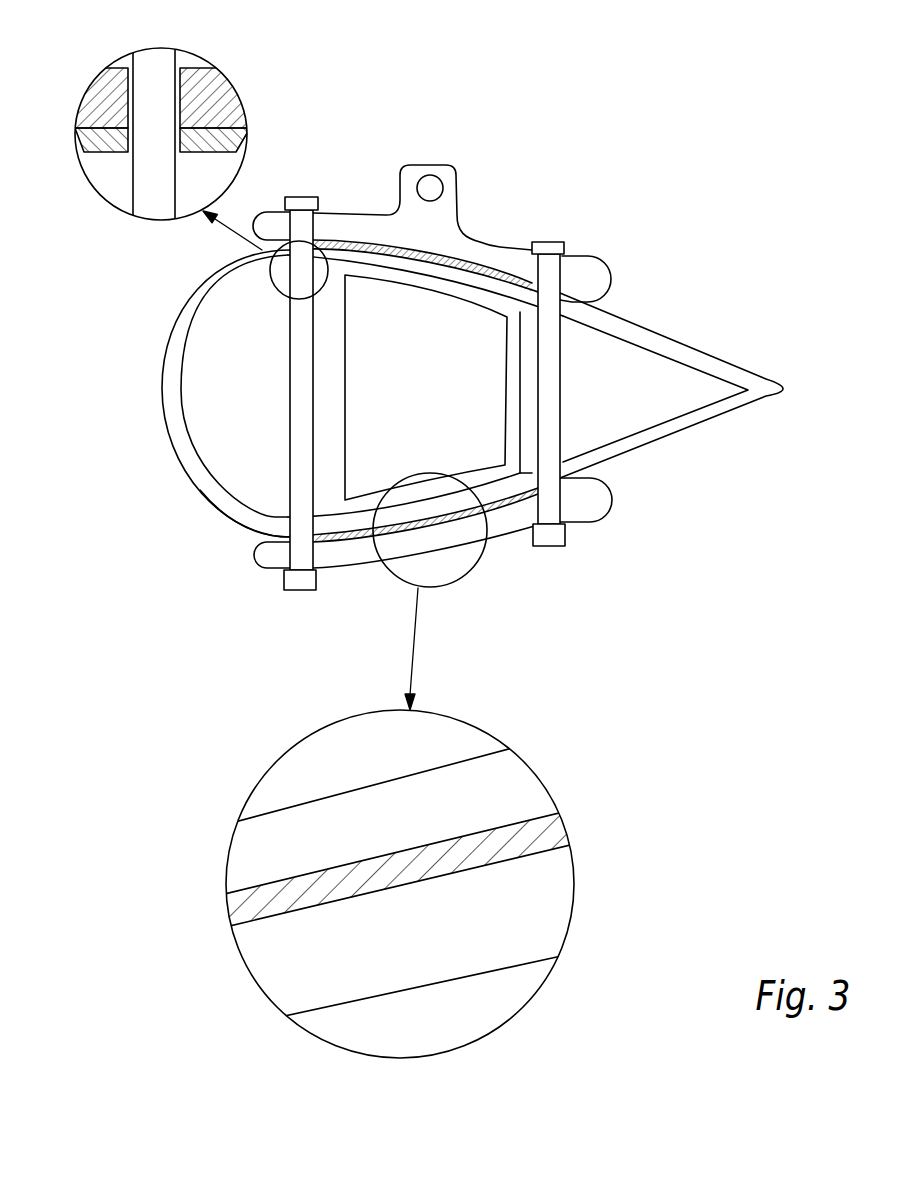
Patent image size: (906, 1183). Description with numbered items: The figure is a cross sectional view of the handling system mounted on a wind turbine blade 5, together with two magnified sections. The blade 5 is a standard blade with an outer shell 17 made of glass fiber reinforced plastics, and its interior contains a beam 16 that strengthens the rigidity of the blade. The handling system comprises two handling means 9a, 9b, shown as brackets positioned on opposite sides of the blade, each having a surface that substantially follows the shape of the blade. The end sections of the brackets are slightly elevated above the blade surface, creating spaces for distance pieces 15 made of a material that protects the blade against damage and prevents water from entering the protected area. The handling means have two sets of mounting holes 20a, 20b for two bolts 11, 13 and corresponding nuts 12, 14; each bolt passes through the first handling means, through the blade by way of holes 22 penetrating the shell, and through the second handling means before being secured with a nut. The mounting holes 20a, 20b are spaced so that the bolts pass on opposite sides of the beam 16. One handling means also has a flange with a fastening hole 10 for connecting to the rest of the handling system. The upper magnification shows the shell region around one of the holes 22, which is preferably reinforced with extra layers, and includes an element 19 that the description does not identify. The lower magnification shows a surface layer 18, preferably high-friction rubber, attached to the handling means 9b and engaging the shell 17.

The wind turbine blade 5 is at (673, 340).
The handling means 9a is at (447, 172).
The handling means 9b is at (587, 500).
The fastening hole 10 is at (424, 185).
The bolt 11 is at (550, 240).
The nut 12 is at (548, 547).
The bolt 13 is at (163, 202).
The nut 14 is at (297, 580).
The distance pieces 15 is at (250, 537).
The beam 16 is at (508, 352).
The outer shell 17 is at (215, 107).
The surface layer 18 is at (235, 908).
The washer/spacer 19 is at (103, 150).
The mounting holes 20a is at (289, 226).
The mounting holes 20b is at (566, 257).
The holes 22 is at (128, 91).